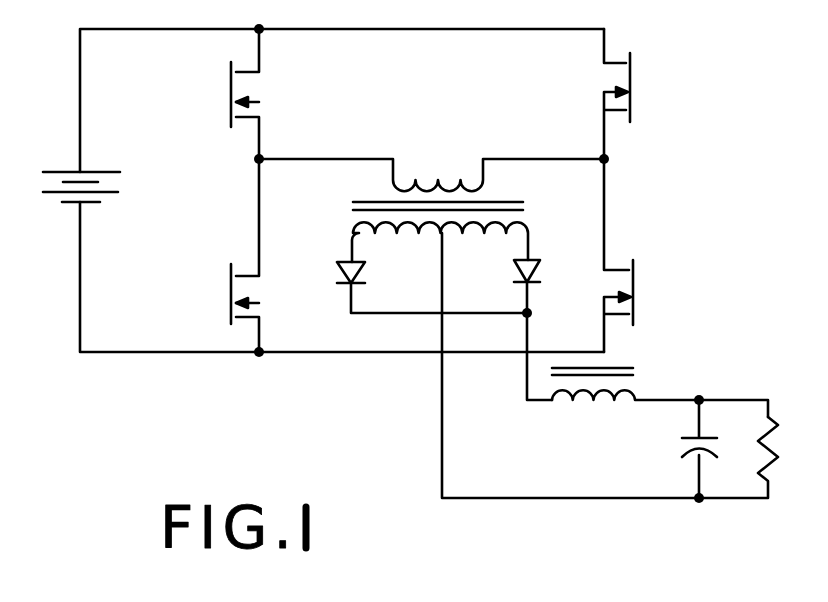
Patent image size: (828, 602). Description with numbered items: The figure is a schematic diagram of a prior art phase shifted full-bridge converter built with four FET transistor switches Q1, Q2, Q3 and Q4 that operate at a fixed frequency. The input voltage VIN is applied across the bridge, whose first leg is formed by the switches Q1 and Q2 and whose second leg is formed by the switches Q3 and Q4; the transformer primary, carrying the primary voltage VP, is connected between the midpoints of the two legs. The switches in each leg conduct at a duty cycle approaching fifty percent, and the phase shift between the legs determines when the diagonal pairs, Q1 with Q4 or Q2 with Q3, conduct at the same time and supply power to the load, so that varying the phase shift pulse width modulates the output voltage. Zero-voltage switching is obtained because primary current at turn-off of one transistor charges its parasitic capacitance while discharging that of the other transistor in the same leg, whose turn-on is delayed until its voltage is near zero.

The FET transistor switch Q1 is at (206, 85).
The FET transistor switch Q2 is at (220, 255).
The FET transistor switch Q3 is at (588, 94).
The FET transistor switch Q4 is at (592, 255).
The input voltage source VIN is at (93, 170).
The primary winding voltage VP is at (503, 135).